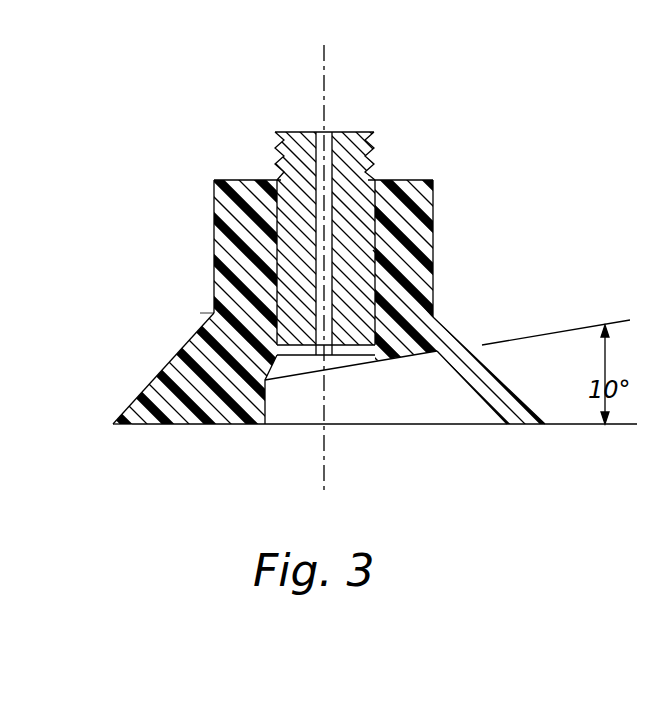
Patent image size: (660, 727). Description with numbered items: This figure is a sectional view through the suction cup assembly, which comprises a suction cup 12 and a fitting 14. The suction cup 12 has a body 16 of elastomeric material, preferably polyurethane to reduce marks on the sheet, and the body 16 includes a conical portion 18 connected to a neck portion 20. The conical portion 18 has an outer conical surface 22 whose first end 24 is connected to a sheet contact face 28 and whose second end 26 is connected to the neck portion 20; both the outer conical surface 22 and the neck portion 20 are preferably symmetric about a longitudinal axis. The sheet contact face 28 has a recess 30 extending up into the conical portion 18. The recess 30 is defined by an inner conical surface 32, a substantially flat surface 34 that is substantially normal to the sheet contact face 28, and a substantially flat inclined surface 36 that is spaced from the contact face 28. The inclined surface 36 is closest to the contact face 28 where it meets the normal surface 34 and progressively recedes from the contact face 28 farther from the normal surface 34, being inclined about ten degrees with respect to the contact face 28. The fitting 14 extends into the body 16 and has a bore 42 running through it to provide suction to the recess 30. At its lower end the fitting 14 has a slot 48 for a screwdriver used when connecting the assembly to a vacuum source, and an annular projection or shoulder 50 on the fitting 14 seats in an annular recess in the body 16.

The suction cup 12 is at (434, 214).
The fitting 14 is at (368, 156).
The body 16 is at (504, 230).
The conical portion 18 is at (167, 364).
The neck portion 20 is at (212, 222).
The outer conical surface 22 is at (147, 387).
The first end 24 is at (113, 424).
The second end 26 is at (213, 316).
The sheet contact face 28 is at (158, 427).
The recess 30 is at (379, 458).
The inner conical surface 32 is at (460, 426).
The normal surface 34 is at (262, 428).
The inclined surface 36 is at (406, 362).
The bore 42 is at (334, 112).
The slot 48 is at (413, 360).
The annular projection or shoulder 50 is at (398, 272).